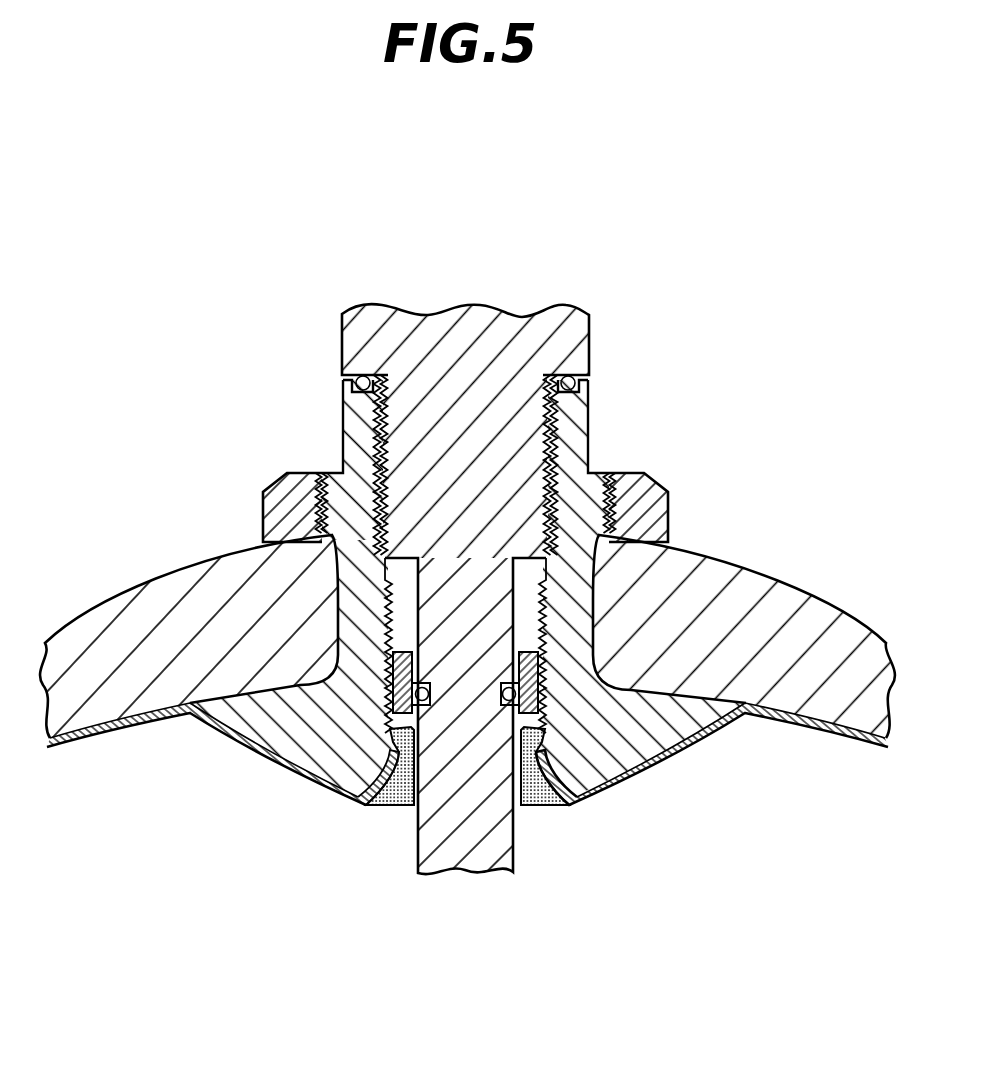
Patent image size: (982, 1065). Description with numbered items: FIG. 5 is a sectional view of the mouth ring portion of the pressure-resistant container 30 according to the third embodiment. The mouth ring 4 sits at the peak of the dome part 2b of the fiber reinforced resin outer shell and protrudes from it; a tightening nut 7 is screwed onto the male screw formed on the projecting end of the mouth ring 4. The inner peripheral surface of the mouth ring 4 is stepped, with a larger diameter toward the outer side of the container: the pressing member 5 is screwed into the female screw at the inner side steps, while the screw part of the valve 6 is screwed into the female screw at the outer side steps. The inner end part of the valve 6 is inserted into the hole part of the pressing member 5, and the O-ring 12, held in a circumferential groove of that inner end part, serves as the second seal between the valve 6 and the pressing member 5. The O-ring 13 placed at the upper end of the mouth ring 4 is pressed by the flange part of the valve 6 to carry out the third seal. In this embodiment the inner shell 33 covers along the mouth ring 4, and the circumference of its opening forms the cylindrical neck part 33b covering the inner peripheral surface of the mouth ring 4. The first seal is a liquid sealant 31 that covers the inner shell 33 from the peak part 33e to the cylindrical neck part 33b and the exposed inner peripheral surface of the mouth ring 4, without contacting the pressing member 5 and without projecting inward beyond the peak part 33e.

The pressure-resistant container 30 is at (565, 213).
The valve 6 is at (588, 335).
The O-ring 13 is at (589, 368).
The mouth ring 4 is at (589, 423).
The tightening nut 7 is at (662, 482).
The dome part 2b is at (110, 620).
The O-ring 12 is at (545, 682).
The pressing member 5 is at (390, 715).
The inner shell 33 is at (97, 726).
The liquid sealant 31 is at (397, 805).
The peak part 33e is at (362, 806).
The cylindrical neck part 33b is at (590, 800).